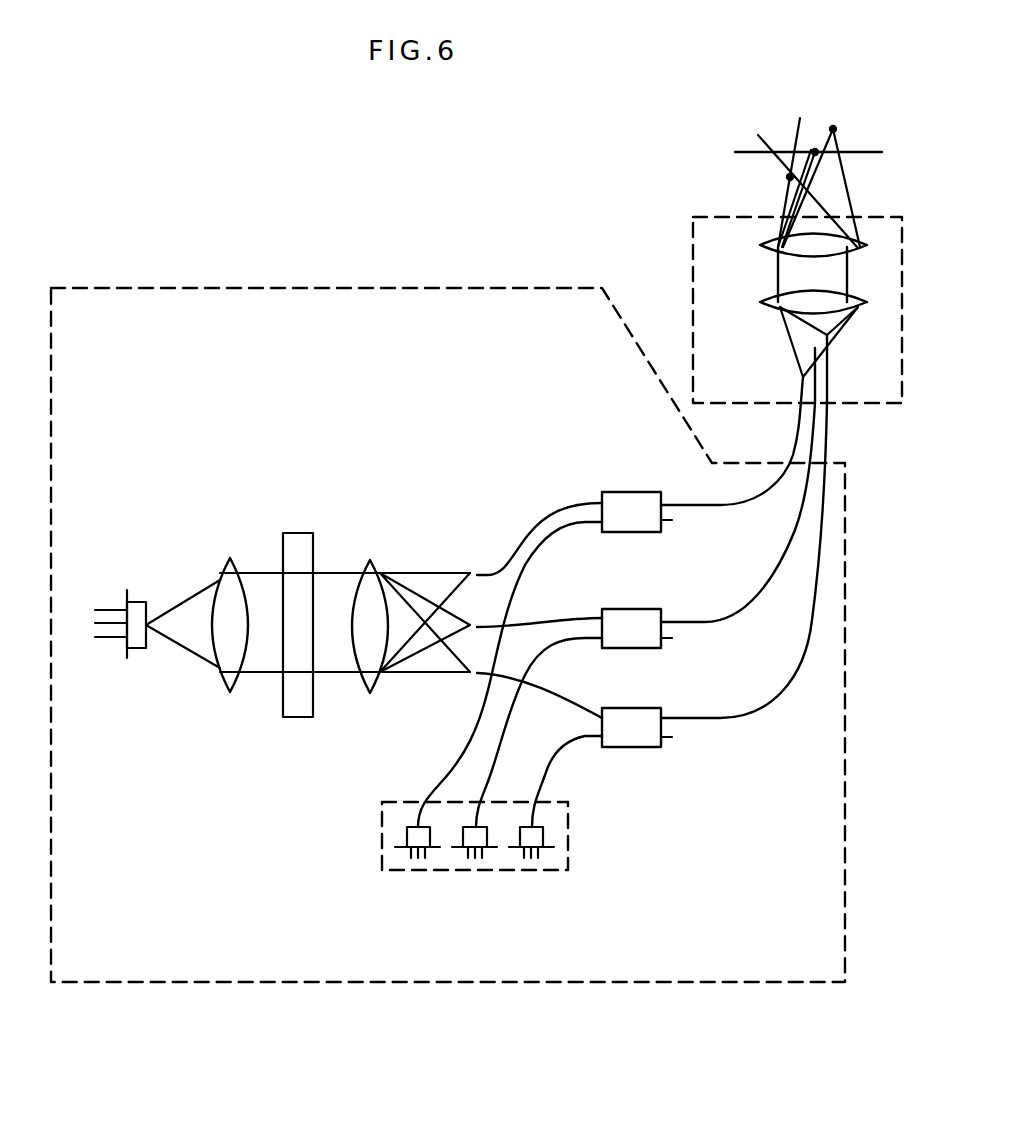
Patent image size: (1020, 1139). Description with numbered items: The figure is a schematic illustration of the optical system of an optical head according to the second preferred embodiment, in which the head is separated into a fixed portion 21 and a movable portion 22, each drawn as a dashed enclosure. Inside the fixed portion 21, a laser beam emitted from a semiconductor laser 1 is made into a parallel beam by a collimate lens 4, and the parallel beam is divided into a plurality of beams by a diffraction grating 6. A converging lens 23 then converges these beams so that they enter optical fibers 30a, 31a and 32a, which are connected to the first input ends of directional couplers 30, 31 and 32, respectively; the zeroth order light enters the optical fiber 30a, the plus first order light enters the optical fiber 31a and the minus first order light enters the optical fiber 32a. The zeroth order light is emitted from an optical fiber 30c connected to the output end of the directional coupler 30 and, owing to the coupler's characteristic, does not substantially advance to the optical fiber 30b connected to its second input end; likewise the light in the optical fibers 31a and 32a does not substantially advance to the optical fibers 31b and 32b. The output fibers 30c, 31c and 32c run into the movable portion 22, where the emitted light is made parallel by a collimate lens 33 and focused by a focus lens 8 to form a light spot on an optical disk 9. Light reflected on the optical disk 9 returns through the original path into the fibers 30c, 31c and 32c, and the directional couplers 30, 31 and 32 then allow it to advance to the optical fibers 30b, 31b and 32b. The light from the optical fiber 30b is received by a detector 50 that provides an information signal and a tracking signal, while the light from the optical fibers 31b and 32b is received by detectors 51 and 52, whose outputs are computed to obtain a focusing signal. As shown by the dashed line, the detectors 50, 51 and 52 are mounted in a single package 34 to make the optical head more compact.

The semiconductor laser 1 is at (140, 658).
The collimate lens 4 is at (216, 690).
The diffraction grating 6 is at (282, 720).
The focus lens 8 is at (766, 252).
The optical disk 9 is at (746, 159).
The fixed portion 21 is at (105, 286).
The movable portion 22 is at (681, 250).
The converging lens 23 is at (366, 700).
The directional coupler 30 is at (625, 610).
The optical fiber 30a is at (520, 615).
The optical fiber 30b is at (497, 766).
The optical fiber 30c is at (726, 623).
The directional coupler 31 is at (625, 491).
The optical fiber 31a is at (520, 530).
The optical fiber 31b is at (447, 770).
The optical fiber 31c is at (701, 510).
The directional coupler 32 is at (626, 710).
The optical fiber 32a is at (556, 700).
The optical fiber 32b is at (566, 752).
The optical fiber 32c is at (718, 722).
The collimate lens 33 is at (770, 312).
The single package 34 is at (380, 857).
The detector 50 is at (470, 873).
The detector 51 is at (408, 873).
The detector 52 is at (527, 873).